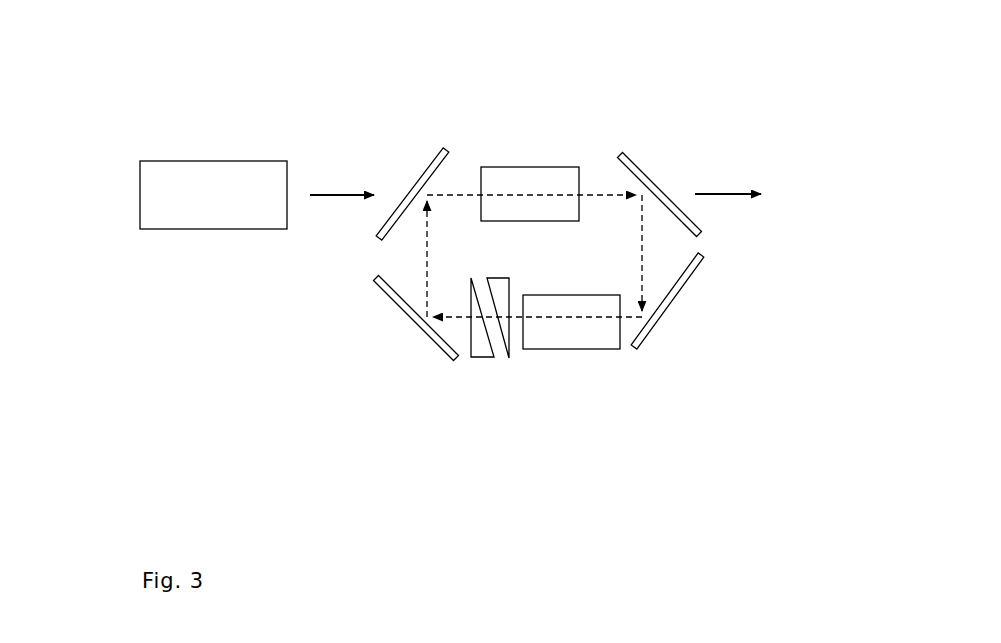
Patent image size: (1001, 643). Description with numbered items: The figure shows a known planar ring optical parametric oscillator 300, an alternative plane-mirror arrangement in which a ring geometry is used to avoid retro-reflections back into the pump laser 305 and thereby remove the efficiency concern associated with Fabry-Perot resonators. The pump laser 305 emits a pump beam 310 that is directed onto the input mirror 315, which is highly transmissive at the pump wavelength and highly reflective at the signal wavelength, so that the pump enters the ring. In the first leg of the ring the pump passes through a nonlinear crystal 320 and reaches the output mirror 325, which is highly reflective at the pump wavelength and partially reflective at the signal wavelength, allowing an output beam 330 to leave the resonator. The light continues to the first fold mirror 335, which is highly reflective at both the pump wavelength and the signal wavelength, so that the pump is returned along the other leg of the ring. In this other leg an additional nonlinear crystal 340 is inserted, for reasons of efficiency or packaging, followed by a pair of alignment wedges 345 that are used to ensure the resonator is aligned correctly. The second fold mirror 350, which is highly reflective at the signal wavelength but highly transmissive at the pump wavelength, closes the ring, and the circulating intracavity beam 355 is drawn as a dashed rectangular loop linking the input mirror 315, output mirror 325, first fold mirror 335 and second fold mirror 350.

The optical parametric oscillator 300 is at (92, 56).
The pump laser 305 is at (212, 238).
The pump beam 310 is at (328, 178).
The input mirror 315 is at (444, 142).
The nonlinear crystal 320 is at (527, 161).
The output mirror 325 is at (624, 144).
The output beam 330 is at (741, 220).
The fold mirror 1 335 is at (680, 304).
The nonlinear crystal 340 is at (642, 415).
The alignment wedges 345 is at (494, 366).
The fold mirror 2 350 is at (451, 368).
The intracavity beam 355 is at (420, 277).